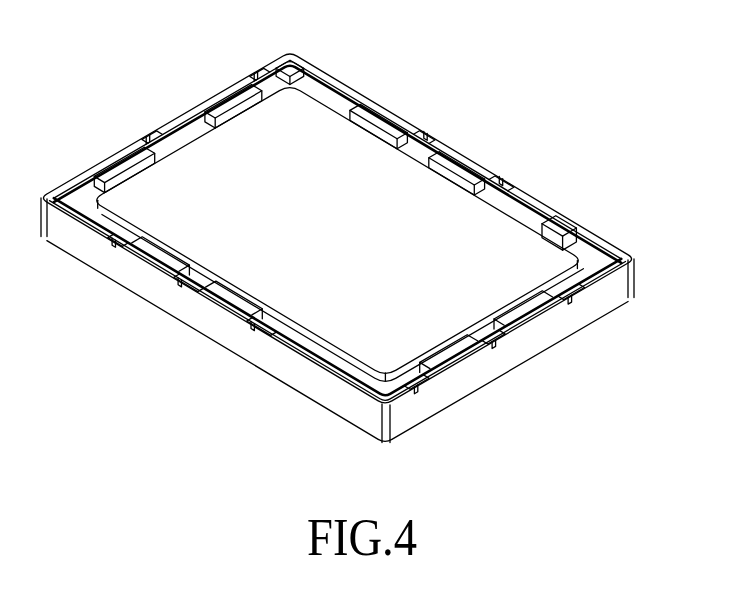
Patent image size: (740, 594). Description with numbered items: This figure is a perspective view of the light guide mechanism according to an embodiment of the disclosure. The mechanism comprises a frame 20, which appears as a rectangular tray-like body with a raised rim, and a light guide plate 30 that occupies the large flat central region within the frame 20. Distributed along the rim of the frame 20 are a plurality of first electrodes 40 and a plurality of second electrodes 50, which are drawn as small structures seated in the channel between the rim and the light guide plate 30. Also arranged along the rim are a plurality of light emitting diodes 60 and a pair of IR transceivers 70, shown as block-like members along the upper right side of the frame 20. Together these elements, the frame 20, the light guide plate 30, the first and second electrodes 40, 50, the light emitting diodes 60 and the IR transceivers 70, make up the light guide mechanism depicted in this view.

The frame 20 is at (163, 293).
The light guide plate 30 is at (195, 155).
The first electrodes 40 is at (483, 197).
The second electrodes 50 is at (562, 212).
The light emitting diodes 60 is at (373, 117).
The IR transceivers 70 is at (445, 160).